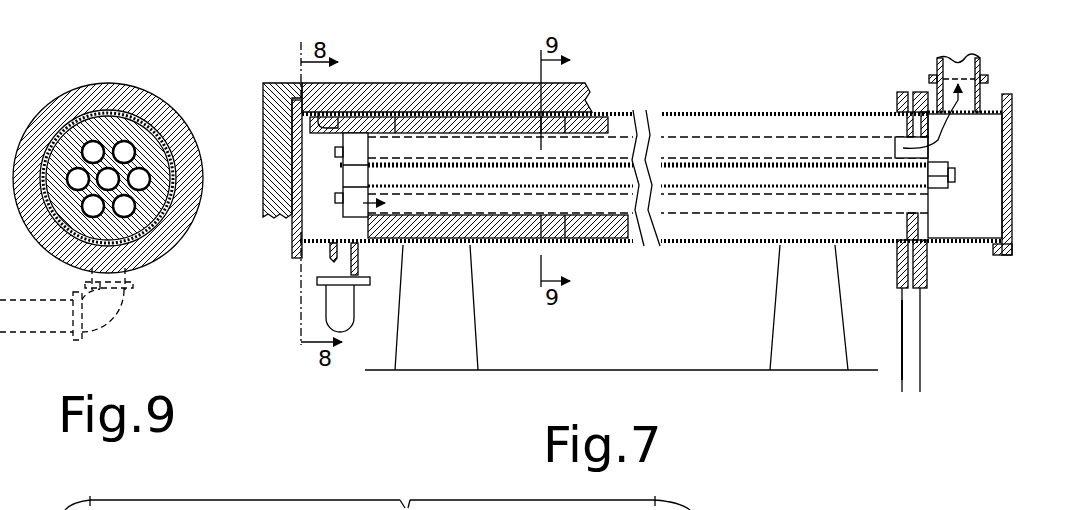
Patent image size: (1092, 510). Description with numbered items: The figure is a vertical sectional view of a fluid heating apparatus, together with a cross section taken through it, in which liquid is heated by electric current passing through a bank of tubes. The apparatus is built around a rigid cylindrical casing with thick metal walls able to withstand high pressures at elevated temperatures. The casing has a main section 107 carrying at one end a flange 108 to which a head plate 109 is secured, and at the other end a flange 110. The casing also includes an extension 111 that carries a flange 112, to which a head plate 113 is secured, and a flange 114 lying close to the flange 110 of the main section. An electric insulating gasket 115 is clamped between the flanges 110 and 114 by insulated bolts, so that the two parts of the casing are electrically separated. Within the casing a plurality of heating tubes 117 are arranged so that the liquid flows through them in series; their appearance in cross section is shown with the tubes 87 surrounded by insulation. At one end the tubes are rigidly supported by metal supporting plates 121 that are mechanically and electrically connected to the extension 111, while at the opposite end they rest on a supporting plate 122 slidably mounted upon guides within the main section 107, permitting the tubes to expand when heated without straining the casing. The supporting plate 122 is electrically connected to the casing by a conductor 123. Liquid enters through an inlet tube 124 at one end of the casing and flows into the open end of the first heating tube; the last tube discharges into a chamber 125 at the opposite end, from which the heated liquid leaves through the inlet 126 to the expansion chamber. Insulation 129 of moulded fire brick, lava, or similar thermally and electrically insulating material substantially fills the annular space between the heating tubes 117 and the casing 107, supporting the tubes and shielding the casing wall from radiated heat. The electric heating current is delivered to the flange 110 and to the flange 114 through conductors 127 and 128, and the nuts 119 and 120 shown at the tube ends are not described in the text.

In FIG. 9, the tubes 87 is at (210, 242).
In FIG. 9, the main section 107 is at (88, 118).
In FIG. 7, the main section 107 is at (690, 248).
In FIG. 7, the flange 108 is at (298, 270).
In FIG. 7, the head plate 109 is at (299, 242).
In FIG. 7, the flange 110 is at (898, 270).
In FIG. 7, the extension 111 is at (957, 242).
In FIG. 7, the flange 112 is at (1000, 257).
In FIG. 7, the head plate 113 is at (1012, 190).
In FIG. 7, the flange 114 is at (928, 272).
In FIG. 7, the electric insulating gasket 115 is at (912, 92).
In FIG. 7, the heating tubes 117 is at (678, 150).
In FIG. 7, the nut 119 is at (940, 173).
In FIG. 7, the inner tube end 120 is at (357, 150).
In FIG. 7, the metal supporting plates 121 is at (930, 216).
In FIG. 7, the supporting plate 122 is at (377, 250).
In FIG. 7, the conductor 123 is at (340, 125).
In FIG. 7, the inlet tube 124 is at (352, 314).
In FIG. 7, the chamber 125 is at (987, 176).
In FIG. 7, the inlet 126 is at (966, 81).
In FIG. 7, the conductor 127 is at (903, 337).
In FIG. 7, the conductor 128 is at (922, 338).
In FIG. 9, the insulation 129 is at (121, 88).